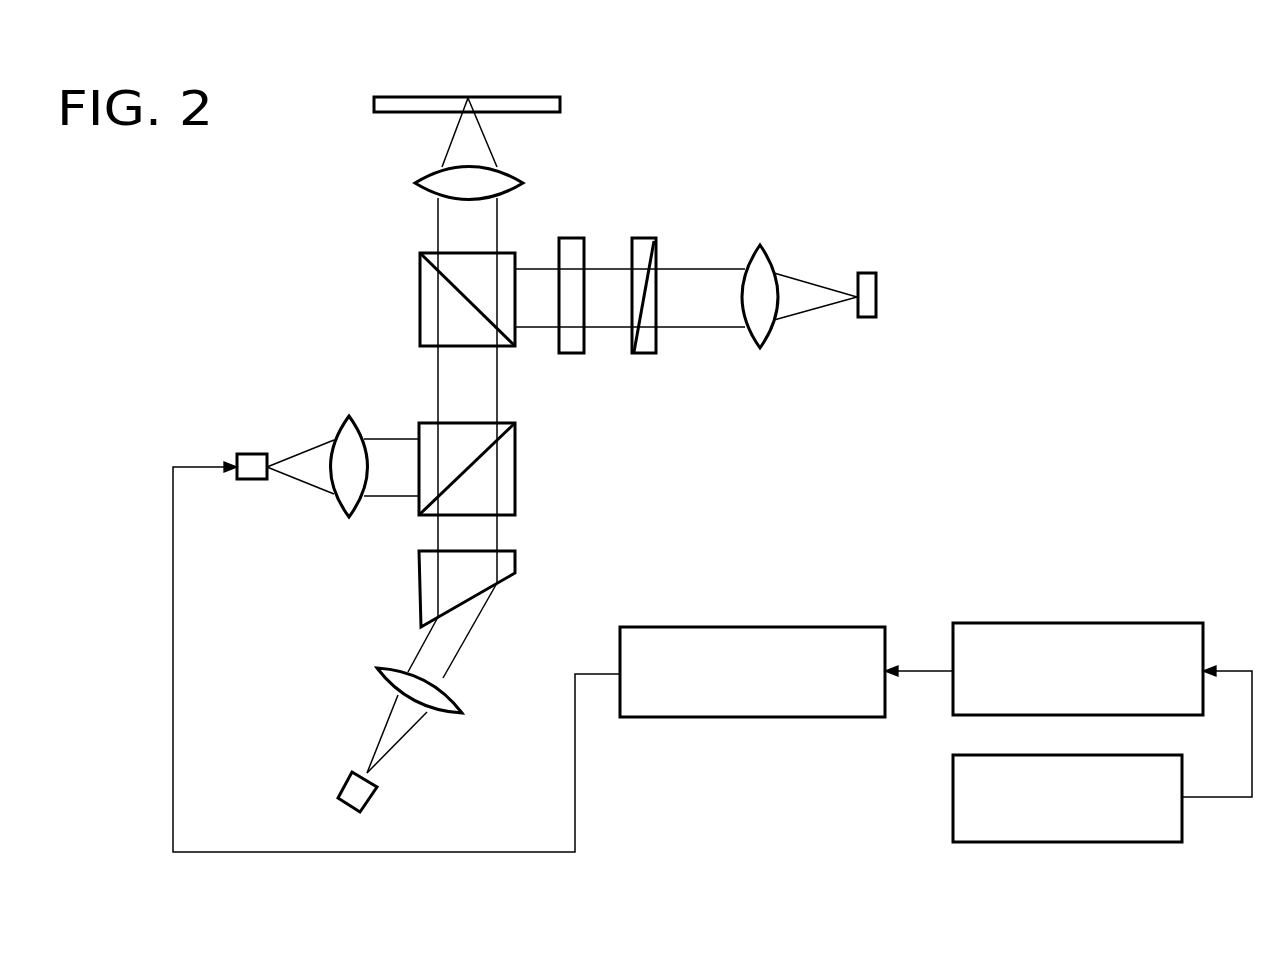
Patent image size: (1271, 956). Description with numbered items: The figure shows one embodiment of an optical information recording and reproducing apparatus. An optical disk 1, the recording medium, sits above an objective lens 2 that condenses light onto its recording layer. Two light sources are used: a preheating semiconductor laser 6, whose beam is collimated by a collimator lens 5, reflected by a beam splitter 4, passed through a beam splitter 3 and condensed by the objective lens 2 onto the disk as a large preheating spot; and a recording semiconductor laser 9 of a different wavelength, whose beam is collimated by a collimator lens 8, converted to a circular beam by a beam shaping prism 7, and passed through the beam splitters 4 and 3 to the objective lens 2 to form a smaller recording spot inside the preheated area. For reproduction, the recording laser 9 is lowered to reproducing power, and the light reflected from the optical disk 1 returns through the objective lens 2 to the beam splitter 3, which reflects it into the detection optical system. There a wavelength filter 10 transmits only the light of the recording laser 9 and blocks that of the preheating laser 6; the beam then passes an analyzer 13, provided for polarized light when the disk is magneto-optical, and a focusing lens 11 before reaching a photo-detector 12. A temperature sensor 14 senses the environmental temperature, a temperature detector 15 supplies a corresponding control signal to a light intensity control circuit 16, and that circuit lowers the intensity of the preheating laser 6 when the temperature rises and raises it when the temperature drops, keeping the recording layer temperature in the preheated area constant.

The optical disk 1 is at (556, 98).
The objective lens 2 is at (515, 183).
The beam splitter 3 is at (420, 304).
The beam splitter 4 is at (428, 428).
The collimator lens 5 is at (344, 436).
The preheating semiconductor laser 6 is at (255, 455).
The beam shaping prism 7 is at (425, 590).
The collimator lens 8 is at (378, 677).
The recording semiconductor laser 9 is at (352, 782).
The wavelength filter 10 is at (572, 345).
The focusing lens 11 is at (760, 343).
The photo-detector 12 is at (868, 313).
The analyzer 13 is at (645, 353).
The temperature sensor 14 is at (958, 780).
The temperature detector 15 is at (1163, 623).
The light intensity control circuit 16 is at (695, 627).